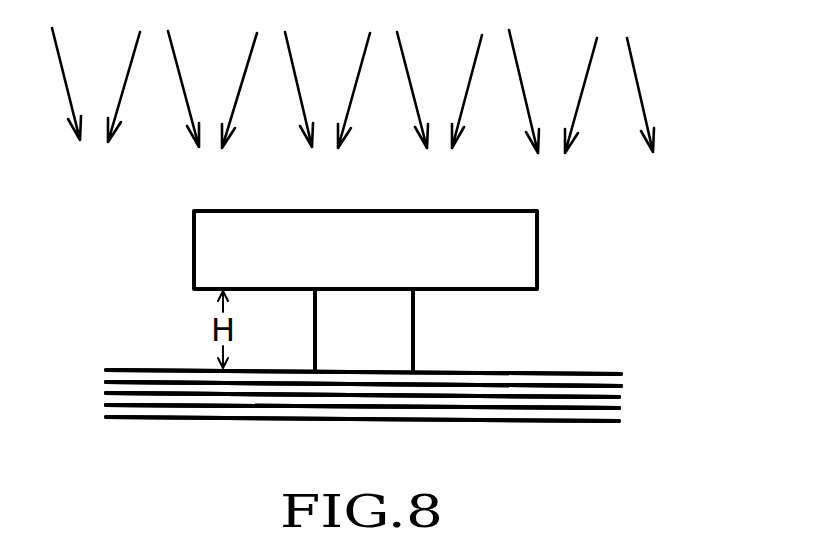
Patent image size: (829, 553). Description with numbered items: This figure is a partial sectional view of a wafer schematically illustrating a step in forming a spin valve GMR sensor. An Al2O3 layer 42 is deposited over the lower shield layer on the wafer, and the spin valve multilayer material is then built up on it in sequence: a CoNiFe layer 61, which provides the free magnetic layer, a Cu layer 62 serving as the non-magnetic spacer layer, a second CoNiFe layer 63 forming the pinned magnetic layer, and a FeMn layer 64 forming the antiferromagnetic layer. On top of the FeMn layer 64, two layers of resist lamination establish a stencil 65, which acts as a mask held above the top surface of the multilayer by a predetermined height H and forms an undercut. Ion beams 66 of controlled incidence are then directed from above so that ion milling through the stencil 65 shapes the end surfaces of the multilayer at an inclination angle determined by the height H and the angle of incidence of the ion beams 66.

The Al2O3 layer 42 is at (117, 418).
The CoNiFe layer 61 is at (600, 421).
The Cu layer 62 is at (620, 407).
The CoNiFe layer 63 is at (585, 396).
The FeMn layer 64 is at (529, 386).
The stencil 65 is at (539, 231).
The ion beams 66 is at (634, 74).